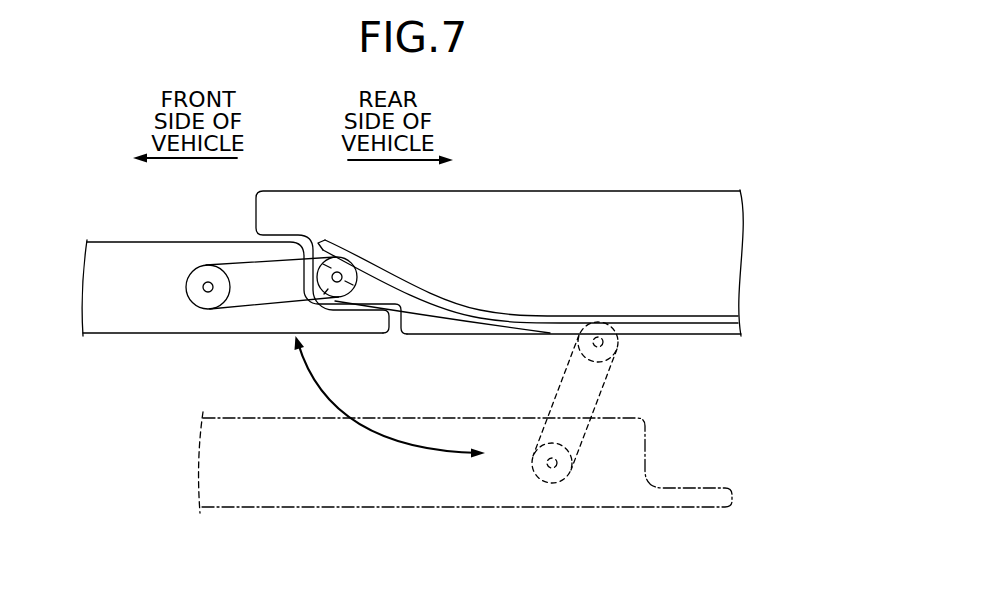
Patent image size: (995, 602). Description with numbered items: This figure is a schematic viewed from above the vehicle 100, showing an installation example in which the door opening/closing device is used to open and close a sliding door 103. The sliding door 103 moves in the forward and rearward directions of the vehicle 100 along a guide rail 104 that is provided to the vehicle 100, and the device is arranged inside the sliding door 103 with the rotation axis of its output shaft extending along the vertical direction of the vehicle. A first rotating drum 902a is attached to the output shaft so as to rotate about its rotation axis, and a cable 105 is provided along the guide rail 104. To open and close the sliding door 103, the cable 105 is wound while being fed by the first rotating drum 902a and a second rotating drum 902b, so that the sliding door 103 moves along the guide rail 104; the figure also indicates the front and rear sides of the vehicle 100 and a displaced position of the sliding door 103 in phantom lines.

The vehicle 100 is at (670, 191).
The sliding door 103 is at (108, 242).
The guide rail 104 is at (712, 327).
The cable 105 is at (662, 326).
The first rotating drum 902a is at (203, 298).
The second rotating drum 902b is at (317, 298).